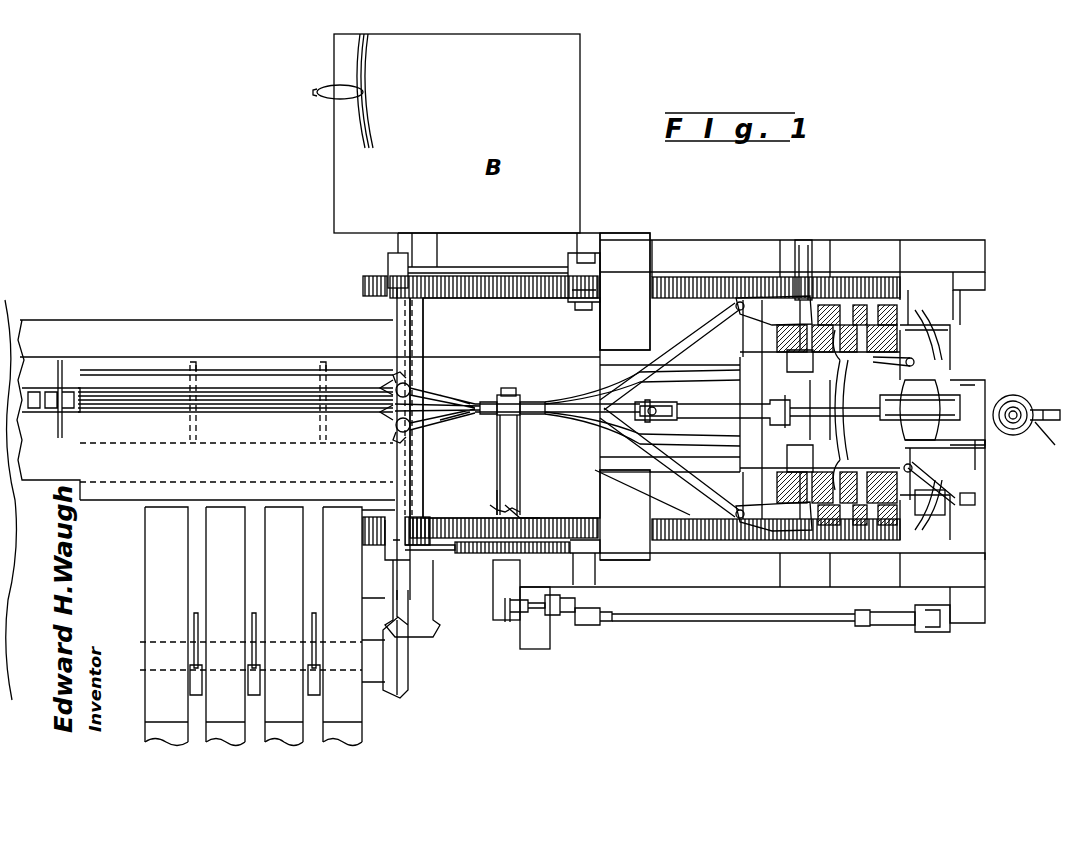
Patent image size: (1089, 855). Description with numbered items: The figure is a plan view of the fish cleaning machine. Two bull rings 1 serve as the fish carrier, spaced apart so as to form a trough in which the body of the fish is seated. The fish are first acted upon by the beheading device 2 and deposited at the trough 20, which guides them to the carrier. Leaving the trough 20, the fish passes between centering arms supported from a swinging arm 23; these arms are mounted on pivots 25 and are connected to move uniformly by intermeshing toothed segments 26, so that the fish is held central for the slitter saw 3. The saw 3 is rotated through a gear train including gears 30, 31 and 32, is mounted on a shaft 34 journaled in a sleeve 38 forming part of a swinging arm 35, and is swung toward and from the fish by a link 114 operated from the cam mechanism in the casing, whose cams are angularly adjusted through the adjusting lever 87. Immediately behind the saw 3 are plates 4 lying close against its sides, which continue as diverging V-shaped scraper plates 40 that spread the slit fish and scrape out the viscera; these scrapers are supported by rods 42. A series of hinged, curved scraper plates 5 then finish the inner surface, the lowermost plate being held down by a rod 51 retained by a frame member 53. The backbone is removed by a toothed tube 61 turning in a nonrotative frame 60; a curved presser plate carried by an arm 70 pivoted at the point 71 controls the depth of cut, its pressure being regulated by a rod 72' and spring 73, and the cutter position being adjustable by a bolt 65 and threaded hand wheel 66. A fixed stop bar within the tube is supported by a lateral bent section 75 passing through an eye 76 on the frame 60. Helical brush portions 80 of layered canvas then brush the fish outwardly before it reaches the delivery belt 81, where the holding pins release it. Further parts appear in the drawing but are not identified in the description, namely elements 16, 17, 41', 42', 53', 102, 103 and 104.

The bull rings 1 is at (511, 408).
The beheading device 2 is at (274, 626).
The slitter saw 3 is at (522, 393).
The plates 4 is at (540, 402).
The scraper plates 5 is at (880, 300).
The guide 16 is at (448, 318).
The rack 17 is at (710, 282).
The trough 20 is at (248, 348).
The swinging arm 23 is at (490, 278).
The pivots 25 is at (396, 380).
The intermeshing toothed segments 26 is at (396, 425).
The gear 30 is at (525, 565).
The gear 31 is at (465, 555).
The gear 32 is at (485, 505).
The shaft 34 is at (548, 500).
The swinging arm 35 is at (505, 605).
The sleeve 38 is at (500, 462).
The scraper plates 40 is at (612, 392).
The block 41' is at (625, 485).
The rods 42 is at (672, 410).
The lever head 42' is at (774, 414).
The rod 51 is at (928, 432).
The frame member 53 is at (642, 492).
The block 53' is at (625, 396).
The nonrotative frame 60 is at (1000, 408).
The tube 61 is at (920, 410).
The bolt 65 is at (1033, 396).
The threaded hand wheel 66 is at (1010, 390).
The arm 70 is at (909, 409).
The pivot point 71 is at (820, 245).
The rod 72' is at (989, 394).
The spring 73 is at (928, 462).
The lateral bent section 75 is at (1051, 436).
The eye 76 is at (1056, 400).
The brush portion 80 is at (945, 345).
The delivery belt 81 is at (80, 378).
The adjusting lever 87 is at (325, 97).
The bracket 102 is at (555, 630).
The rod 103 is at (785, 625).
The clevis 104 is at (940, 632).
The link 114 is at (595, 593).